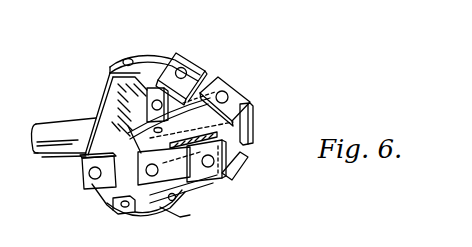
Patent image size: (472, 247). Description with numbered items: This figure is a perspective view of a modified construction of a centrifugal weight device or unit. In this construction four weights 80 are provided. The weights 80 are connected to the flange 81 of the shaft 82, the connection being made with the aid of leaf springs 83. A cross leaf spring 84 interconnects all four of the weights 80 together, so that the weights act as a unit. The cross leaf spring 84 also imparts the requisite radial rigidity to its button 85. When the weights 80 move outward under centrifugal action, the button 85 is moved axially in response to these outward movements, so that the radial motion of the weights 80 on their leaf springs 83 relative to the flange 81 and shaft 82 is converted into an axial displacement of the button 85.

The weights 80 is at (228, 92).
The flange 81 is at (117, 97).
The shaft 82 is at (53, 143).
The leaf springs 83 is at (147, 60).
The cross leaf spring 84 is at (182, 103).
The button 85 is at (112, 122).